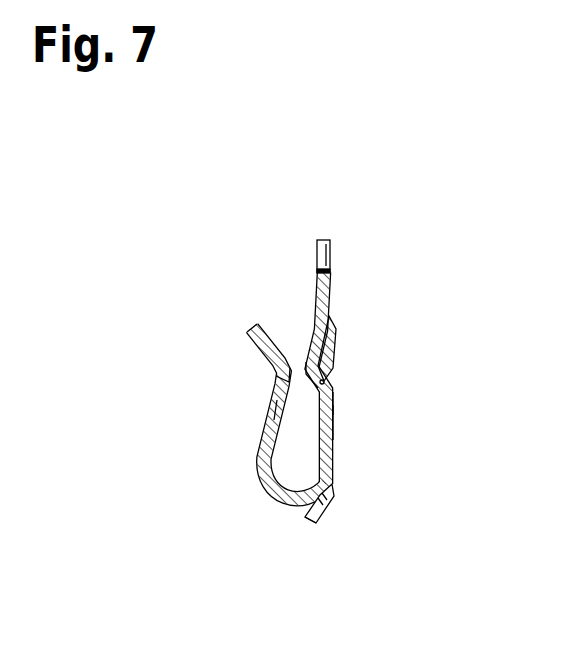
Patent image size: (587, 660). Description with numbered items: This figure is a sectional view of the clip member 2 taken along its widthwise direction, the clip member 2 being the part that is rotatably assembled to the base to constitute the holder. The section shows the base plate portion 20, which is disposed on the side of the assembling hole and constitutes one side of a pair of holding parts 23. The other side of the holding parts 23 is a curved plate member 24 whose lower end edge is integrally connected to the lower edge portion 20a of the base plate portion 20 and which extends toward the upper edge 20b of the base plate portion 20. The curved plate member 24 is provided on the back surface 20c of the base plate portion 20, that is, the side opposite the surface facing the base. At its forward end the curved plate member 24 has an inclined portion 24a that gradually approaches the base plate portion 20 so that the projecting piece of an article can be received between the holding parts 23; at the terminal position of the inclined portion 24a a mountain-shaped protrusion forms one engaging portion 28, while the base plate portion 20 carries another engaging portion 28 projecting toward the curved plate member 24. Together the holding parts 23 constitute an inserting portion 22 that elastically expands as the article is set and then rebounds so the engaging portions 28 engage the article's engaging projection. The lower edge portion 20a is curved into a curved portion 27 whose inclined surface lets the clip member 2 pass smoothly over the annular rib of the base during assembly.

The clip member 2 is at (333, 420).
The base plate portion 20 is at (333, 374).
The lower edge portion 20a is at (307, 524).
The upper edge 20b is at (325, 240).
The back surface 20c is at (330, 287).
The inserting portion 22 is at (288, 383).
The holding parts 23 is at (333, 395).
The curved plate member 24 is at (262, 462).
The inclined portion 24a is at (250, 352).
The curved portion 27 is at (320, 522).
The engaging portions 28 is at (333, 348).